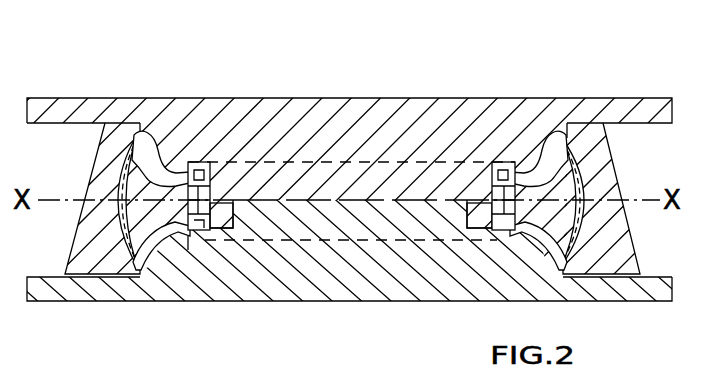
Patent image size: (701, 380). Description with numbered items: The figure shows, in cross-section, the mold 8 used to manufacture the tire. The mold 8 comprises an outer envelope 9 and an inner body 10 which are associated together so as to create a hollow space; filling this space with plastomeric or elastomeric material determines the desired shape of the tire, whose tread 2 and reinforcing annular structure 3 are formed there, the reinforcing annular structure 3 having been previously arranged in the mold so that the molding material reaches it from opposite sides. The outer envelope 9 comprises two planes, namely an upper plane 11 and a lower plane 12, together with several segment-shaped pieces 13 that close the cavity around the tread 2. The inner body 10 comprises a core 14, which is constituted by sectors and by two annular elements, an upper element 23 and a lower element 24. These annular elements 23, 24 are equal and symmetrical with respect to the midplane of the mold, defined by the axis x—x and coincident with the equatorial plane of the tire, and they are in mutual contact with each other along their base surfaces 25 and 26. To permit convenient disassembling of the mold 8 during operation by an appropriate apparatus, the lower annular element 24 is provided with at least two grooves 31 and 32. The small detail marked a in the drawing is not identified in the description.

The mold 8 is at (359, 76).
The outer envelope 9 is at (410, 108).
The inner body 10 is at (297, 225).
The upper plane 11 is at (240, 108).
The lower plane 12 is at (327, 290).
The segment-shaped pieces 13 is at (82, 243).
The core 14 is at (132, 175).
The tread 2 is at (116, 190).
The reinforcing annular structure 3 is at (128, 213).
The upper annular element 23 is at (196, 162).
The lower annular element 24 is at (192, 258).
The base surface 25 is at (205, 162).
The base surface 26 is at (494, 163).
The groove 31 is at (248, 200).
The groove 32 is at (474, 170).
The spacer a is at (232, 240).